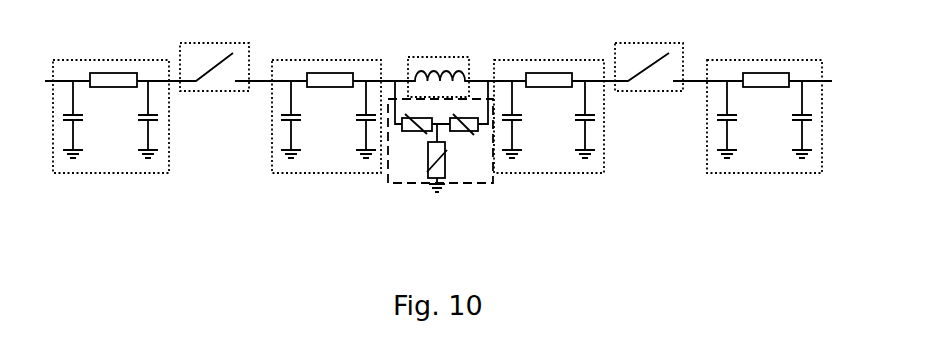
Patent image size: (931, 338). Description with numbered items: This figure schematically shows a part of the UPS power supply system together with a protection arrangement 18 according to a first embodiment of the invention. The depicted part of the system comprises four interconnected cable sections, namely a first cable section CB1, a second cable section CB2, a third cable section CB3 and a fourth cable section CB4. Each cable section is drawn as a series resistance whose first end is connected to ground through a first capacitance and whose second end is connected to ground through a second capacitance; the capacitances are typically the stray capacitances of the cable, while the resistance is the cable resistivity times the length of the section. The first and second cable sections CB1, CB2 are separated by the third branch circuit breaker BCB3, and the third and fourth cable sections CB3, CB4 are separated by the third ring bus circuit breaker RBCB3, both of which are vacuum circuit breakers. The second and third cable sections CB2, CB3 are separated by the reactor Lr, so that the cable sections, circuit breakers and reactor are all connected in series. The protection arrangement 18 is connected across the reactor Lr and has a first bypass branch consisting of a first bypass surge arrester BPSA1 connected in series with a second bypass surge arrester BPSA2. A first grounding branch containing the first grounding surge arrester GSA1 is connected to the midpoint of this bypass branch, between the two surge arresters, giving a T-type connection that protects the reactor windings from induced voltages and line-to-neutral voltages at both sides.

The first cable section CB1 is at (112, 96).
The third branch circuit breaker BCB3 is at (220, 48).
The second cable section CB2 is at (334, 99).
The protection arrangement 18 is at (388, 100).
The reactor Lr is at (451, 59).
The first bypass surge arrester BPSA1 is at (413, 131).
The second bypass surge arrester BPSA2 is at (467, 131).
The first grounding surge arrester GSA1 is at (447, 175).
The third cable section CB3 is at (554, 99).
The third ring bus circuit breaker RBCB3 is at (657, 48).
The fourth cable section CB4 is at (769, 98).